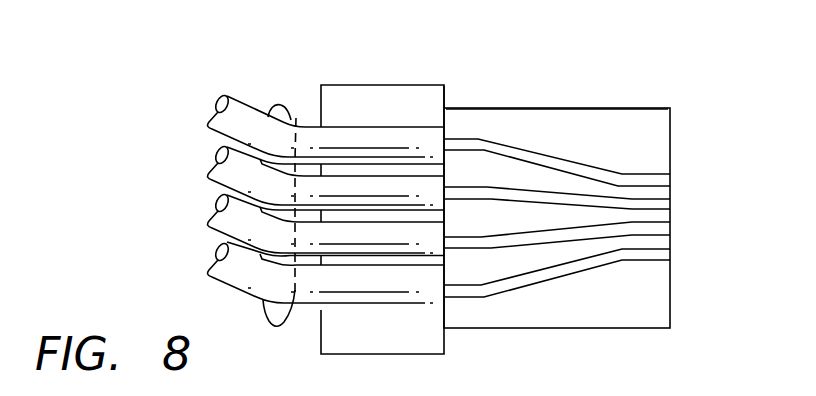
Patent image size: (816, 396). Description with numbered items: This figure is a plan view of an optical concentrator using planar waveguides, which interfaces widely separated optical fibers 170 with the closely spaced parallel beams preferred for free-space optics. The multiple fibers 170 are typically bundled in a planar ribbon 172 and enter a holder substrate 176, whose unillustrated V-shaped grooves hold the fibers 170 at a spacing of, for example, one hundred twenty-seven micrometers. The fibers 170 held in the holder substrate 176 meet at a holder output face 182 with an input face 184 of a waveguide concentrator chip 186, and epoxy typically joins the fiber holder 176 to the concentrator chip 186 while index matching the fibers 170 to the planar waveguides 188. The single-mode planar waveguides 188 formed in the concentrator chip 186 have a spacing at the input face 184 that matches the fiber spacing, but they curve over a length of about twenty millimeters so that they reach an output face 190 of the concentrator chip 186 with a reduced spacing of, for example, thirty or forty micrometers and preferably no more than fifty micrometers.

The optical fibers 170 is at (238, 112).
The planar ribbon 172 is at (296, 118).
The holder substrate 176 is at (357, 99).
The holder output face 182 is at (443, 110).
The input face 184 is at (557, 176).
The waveguide concentrator chip 186 is at (550, 120).
The planar waveguides 188 is at (593, 167).
The output face 190 is at (671, 289).